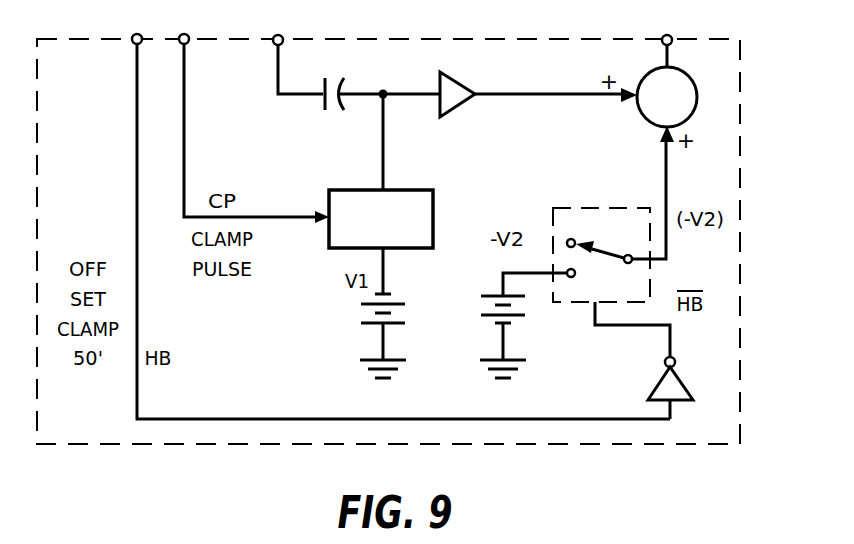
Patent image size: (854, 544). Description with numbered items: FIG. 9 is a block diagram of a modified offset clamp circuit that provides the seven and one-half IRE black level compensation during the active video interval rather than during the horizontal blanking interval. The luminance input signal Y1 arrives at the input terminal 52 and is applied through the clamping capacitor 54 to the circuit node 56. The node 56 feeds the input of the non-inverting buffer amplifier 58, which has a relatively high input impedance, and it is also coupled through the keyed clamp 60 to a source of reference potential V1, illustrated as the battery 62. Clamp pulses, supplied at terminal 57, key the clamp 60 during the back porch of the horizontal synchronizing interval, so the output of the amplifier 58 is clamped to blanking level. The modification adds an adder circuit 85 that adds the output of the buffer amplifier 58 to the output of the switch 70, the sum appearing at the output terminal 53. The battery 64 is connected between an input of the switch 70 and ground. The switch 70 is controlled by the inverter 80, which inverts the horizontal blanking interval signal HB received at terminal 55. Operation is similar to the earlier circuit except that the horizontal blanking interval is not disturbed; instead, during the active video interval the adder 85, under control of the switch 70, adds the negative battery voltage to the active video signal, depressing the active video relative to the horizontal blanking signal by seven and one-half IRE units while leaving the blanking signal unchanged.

The input terminal 52 is at (282, 34).
The output terminal 53 is at (669, 34).
The coupling capacitor 54 is at (321, 110).
The HB input terminal 55 is at (128, 41).
The circuit node 56 is at (386, 88).
The clamp pulse input terminal 57 is at (190, 45).
The non-inverting buffer amplifier 58 is at (462, 80).
The keyed clamp 60 is at (362, 188).
The battery 62 is at (358, 322).
The battery 64 is at (480, 320).
The switch 70 is at (613, 206).
The inverter 80 is at (657, 388).
The adder circuit 85 is at (686, 72).